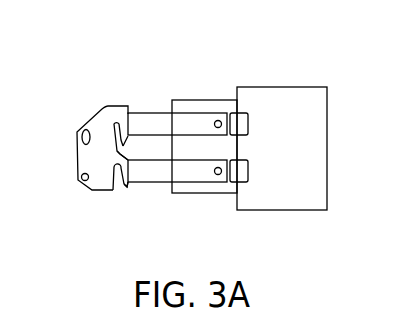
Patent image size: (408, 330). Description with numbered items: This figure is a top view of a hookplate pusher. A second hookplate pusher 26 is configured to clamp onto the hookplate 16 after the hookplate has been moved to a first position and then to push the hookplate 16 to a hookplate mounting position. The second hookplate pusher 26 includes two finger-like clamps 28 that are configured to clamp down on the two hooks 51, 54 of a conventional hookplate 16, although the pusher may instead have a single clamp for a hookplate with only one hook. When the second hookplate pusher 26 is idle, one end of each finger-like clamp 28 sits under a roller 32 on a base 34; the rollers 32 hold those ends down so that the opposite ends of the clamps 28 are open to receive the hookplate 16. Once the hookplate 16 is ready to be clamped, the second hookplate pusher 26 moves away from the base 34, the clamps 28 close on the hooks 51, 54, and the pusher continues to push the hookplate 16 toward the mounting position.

The hookplate 16 is at (102, 118).
The finger-like clamps 28 is at (127, 112).
The hook 51 is at (105, 149).
The hook 54 is at (125, 190).
The second hookplate pusher 26 is at (192, 105).
The rollers 32 is at (242, 159).
The base 34 is at (317, 158).